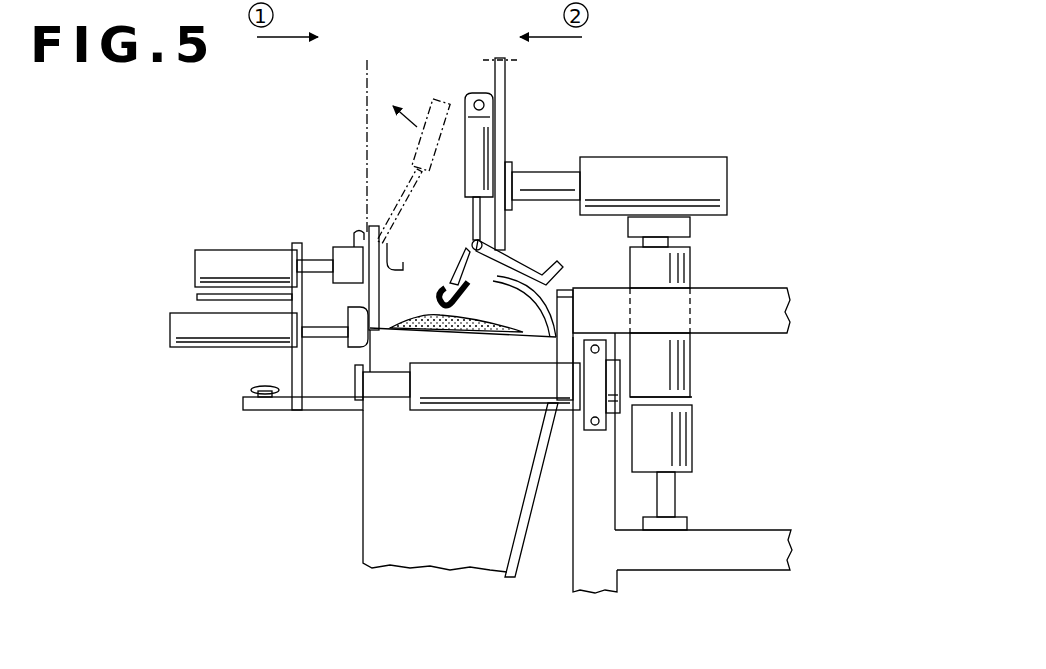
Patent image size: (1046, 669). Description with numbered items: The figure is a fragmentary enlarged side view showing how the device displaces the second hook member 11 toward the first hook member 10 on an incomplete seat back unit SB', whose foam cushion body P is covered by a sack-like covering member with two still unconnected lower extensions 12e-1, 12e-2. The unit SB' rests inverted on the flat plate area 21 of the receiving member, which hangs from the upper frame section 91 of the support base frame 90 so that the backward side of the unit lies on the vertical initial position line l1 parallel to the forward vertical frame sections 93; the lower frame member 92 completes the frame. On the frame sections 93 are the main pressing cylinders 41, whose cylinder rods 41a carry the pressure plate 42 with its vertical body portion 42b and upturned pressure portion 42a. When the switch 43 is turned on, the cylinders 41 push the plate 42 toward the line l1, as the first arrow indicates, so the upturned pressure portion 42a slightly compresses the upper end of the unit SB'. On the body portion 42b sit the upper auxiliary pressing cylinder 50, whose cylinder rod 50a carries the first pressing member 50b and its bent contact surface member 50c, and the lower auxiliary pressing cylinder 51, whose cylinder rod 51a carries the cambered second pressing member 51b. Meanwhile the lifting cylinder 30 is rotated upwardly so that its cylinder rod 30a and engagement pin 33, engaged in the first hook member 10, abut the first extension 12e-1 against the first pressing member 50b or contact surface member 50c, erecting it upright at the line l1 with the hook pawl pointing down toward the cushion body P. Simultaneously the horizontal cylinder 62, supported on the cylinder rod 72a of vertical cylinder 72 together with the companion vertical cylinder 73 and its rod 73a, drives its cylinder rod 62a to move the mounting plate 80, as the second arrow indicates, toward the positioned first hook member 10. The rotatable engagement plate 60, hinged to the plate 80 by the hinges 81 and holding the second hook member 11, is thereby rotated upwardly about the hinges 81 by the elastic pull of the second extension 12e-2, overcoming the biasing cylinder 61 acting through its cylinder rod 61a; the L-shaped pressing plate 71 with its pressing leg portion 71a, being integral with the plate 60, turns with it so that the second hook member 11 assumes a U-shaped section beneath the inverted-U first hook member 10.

The first hook member 10 is at (440, 311).
The second hook member 11 is at (458, 270).
The first lower extension 12e-1 is at (365, 245).
The second lower extension 12e-2 is at (565, 300).
The flat plate area 21 is at (520, 543).
The lifting cylinder 30 is at (438, 98).
The cylinder rod 30a is at (397, 136).
The engagement pin 33 is at (441, 209).
The main pressing cylinder 41 is at (560, 402).
The cylinder rod 41a is at (383, 400).
The pressure plate 42 is at (288, 362).
The upturned pressure portion 42a is at (333, 408).
The vertical body portion 42b is at (197, 297).
The switch 43 is at (222, 399).
The upper auxiliary pressing cylinder 50 is at (210, 257).
The cylinder rod 50a is at (317, 262).
The first pressing member 50b is at (340, 245).
The contact surface member 50c is at (350, 235).
The lower auxiliary pressing cylinder 51 is at (172, 335).
The cylinder rod 51a is at (323, 330).
The second pressing member 51b is at (368, 338).
The rotatable engagement plate 60 is at (497, 292).
The biasing cylinder 61 is at (490, 137).
The cylinder rod 61a is at (510, 225).
The horizontal cylinder 62 is at (693, 163).
The cylinder rod 62a is at (547, 173).
The pressing plate 71 is at (520, 252).
The pressing leg portion 71a is at (548, 264).
The vertical cylinder 72 is at (692, 267).
The cylinder rod 72a is at (680, 240).
The vertical cylinder 73 is at (693, 430).
The lower cylinder rod 73a is at (677, 493).
The mounting plate 80 is at (503, 97).
The hinge 81 is at (472, 238).
The support base frame 90 is at (729, 443).
The upper frame section 91 is at (767, 322).
The lower frame beam 92 is at (743, 560).
The forward vertical frame section 93 is at (602, 592).
The foam cushion body P is at (466, 330).
The incomplete seat back unit SB' is at (416, 450).
The initial position line l1 is at (366, 129).